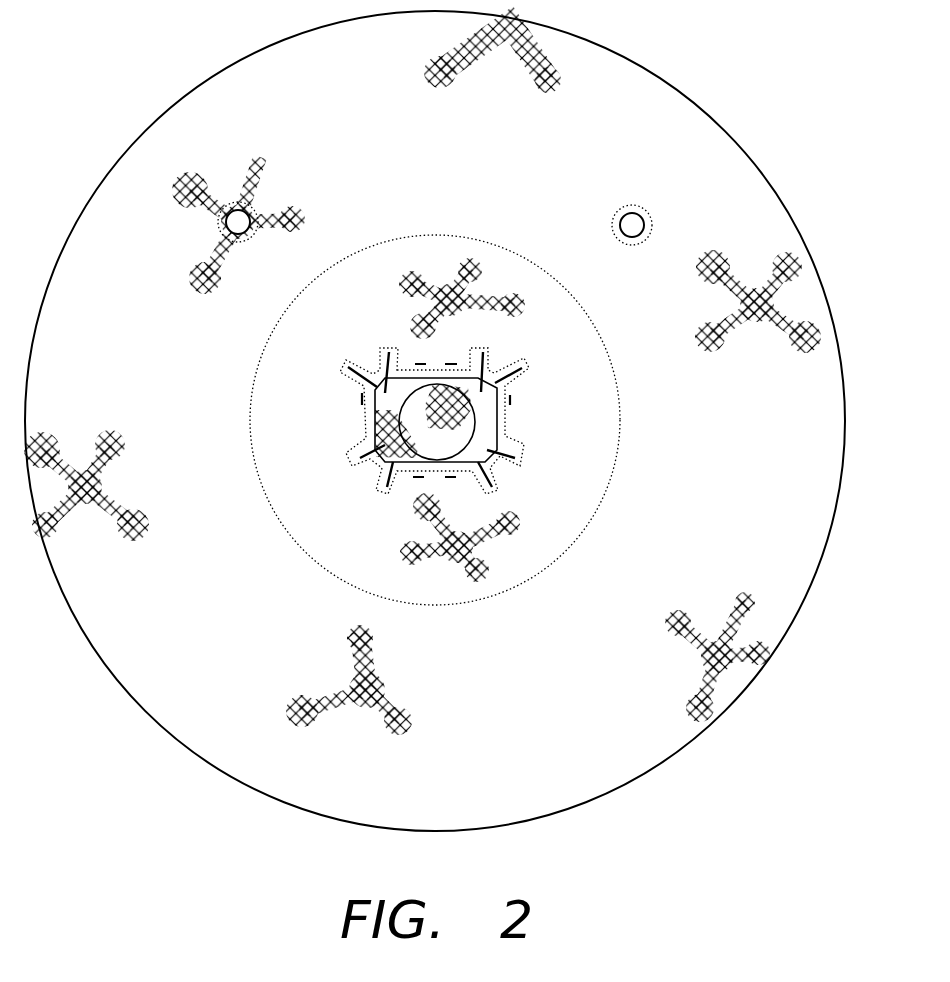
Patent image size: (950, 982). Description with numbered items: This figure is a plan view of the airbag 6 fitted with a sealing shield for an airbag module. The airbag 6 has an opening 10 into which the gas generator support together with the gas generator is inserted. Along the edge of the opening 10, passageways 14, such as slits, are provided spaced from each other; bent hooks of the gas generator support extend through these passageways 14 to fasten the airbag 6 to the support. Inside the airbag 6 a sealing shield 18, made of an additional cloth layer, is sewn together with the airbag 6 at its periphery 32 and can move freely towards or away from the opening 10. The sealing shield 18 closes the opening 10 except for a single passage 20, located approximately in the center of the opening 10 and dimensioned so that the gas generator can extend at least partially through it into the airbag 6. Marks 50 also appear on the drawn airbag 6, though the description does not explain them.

The airbag 6 is at (162, 142).
The sensor 50 is at (238, 220).
The periphery 32 is at (500, 600).
The opening 10 is at (485, 421).
The passage 20 is at (445, 442).
The sealing shield 18 is at (380, 385).
The passageways 14 is at (365, 438).